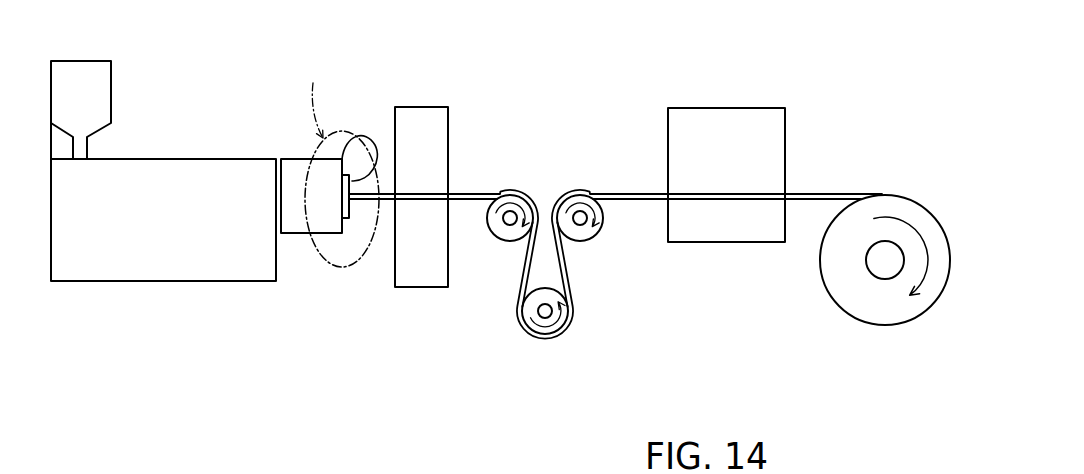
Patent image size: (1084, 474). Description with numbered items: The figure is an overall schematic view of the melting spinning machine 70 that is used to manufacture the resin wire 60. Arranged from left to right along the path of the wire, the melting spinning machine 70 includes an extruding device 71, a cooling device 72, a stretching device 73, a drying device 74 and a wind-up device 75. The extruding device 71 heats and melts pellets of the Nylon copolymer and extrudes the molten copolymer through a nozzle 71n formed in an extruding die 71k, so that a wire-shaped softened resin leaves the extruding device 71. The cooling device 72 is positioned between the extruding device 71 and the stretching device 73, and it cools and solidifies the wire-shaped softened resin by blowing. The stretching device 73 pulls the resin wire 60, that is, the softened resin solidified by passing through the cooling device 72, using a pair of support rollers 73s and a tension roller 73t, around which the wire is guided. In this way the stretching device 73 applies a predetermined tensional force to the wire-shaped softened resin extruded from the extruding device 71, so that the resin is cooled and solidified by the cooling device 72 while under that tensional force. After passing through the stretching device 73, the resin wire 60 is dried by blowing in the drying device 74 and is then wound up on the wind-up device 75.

The resin wire 60 is at (472, 193).
The melting spinning machine 70 is at (474, 66).
The extruding device 71 is at (173, 180).
The extruding die 71k is at (297, 222).
The nozzle 71n is at (369, 166).
The cooling device 72 is at (432, 132).
The stretching device 73 is at (537, 182).
The support rollers 73s is at (498, 232).
The tension roller 73t is at (527, 313).
The drying device 74 is at (738, 137).
The wind-up device 75 is at (858, 293).